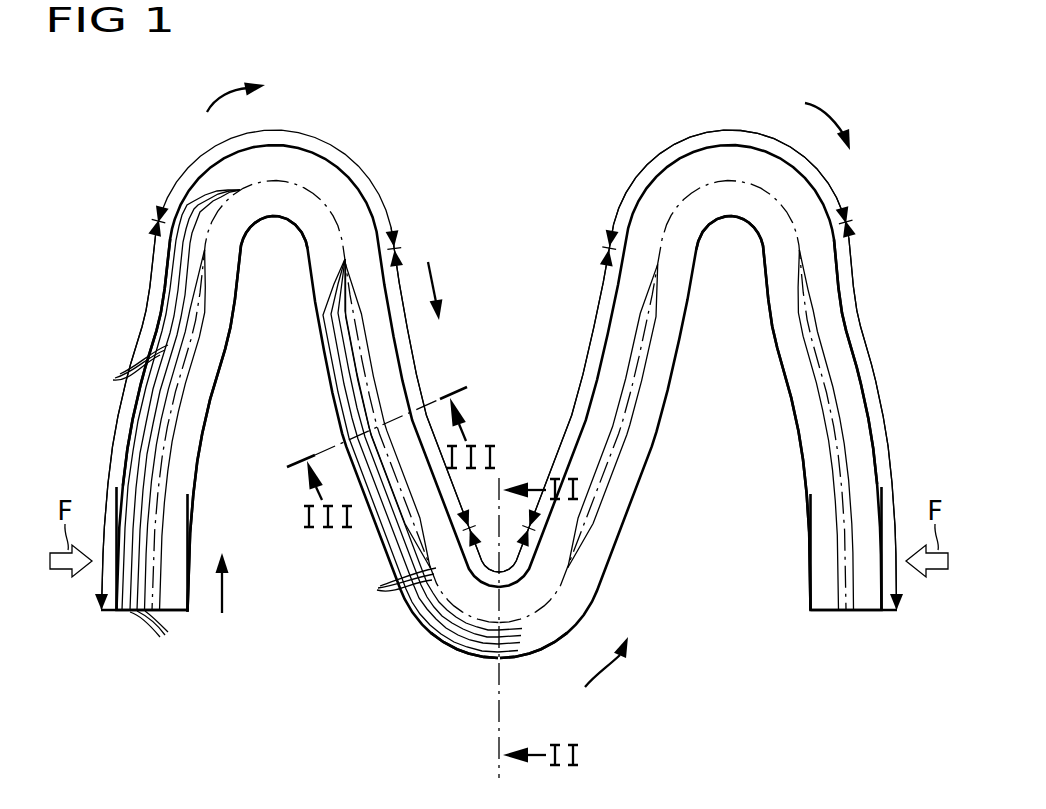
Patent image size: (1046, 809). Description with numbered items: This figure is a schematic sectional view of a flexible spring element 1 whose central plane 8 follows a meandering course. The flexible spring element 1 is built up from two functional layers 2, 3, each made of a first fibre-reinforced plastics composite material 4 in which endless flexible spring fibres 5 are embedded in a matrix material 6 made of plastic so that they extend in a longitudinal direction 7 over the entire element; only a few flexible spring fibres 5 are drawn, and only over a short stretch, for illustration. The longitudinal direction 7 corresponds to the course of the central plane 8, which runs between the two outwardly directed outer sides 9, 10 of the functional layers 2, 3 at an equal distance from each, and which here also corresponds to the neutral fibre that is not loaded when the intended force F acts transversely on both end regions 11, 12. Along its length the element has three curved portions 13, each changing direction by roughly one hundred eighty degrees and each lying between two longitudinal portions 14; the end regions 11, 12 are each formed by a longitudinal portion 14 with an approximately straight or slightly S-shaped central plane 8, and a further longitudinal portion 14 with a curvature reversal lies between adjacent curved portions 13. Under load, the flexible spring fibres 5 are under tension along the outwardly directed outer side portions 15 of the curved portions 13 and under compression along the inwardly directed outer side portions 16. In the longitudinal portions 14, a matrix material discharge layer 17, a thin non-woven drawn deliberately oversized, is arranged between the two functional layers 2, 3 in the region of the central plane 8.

The flexible spring element 1 is at (442, 203).
The functional layer 2 is at (275, 160).
The functional layer 3 is at (268, 215).
The first fibre-reinforced plastics composite material 4 is at (437, 600).
The flexible spring fibres 5 is at (265, 500).
The matrix material 6 is at (138, 466).
The longitudinal direction 7 is at (225, 92).
The central plane 8 is at (176, 405).
The outer side 9 is at (162, 308).
The outer side 10 is at (229, 340).
The end region 11 is at (86, 618).
The end region 12 is at (768, 610).
The curved portion 13 is at (200, 147).
The longitudinal portion 14 is at (138, 343).
The outer side portion 15 is at (315, 157).
The outer side portion 16 is at (281, 226).
The matrix material discharge layer 17 is at (178, 527).